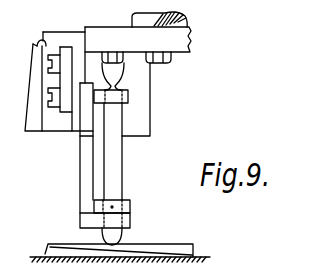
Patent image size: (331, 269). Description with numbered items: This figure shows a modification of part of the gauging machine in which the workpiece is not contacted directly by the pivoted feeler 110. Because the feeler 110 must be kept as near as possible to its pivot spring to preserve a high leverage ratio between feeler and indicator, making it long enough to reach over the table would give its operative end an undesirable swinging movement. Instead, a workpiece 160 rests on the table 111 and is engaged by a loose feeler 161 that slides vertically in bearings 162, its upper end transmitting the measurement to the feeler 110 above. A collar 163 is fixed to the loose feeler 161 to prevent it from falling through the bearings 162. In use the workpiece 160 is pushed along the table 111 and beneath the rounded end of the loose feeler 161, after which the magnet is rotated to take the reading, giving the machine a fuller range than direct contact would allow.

The feeler 110 is at (116, 74).
The table 111 is at (199, 257).
The workpiece 160 is at (176, 254).
The loose feeler 161 is at (122, 165).
The bearings 162 is at (128, 103).
The collar 163 is at (94, 209).